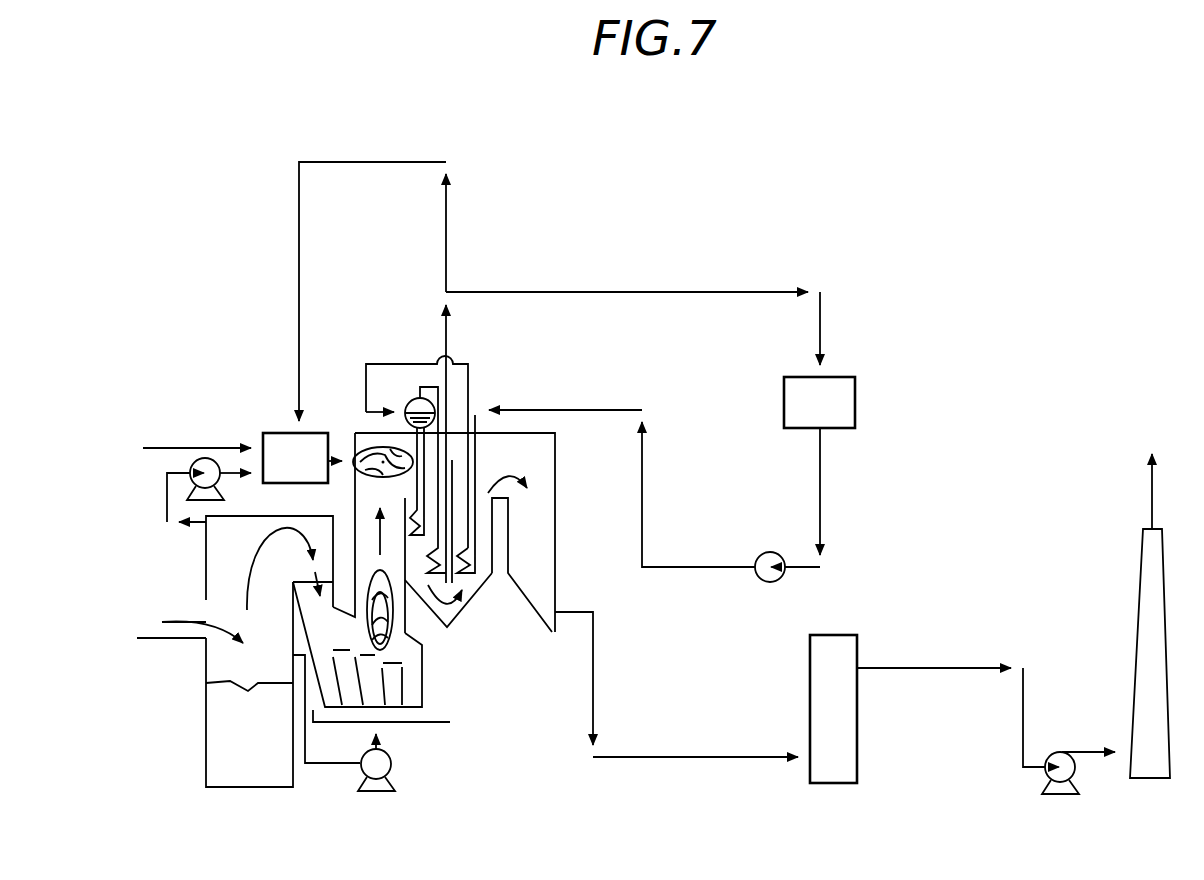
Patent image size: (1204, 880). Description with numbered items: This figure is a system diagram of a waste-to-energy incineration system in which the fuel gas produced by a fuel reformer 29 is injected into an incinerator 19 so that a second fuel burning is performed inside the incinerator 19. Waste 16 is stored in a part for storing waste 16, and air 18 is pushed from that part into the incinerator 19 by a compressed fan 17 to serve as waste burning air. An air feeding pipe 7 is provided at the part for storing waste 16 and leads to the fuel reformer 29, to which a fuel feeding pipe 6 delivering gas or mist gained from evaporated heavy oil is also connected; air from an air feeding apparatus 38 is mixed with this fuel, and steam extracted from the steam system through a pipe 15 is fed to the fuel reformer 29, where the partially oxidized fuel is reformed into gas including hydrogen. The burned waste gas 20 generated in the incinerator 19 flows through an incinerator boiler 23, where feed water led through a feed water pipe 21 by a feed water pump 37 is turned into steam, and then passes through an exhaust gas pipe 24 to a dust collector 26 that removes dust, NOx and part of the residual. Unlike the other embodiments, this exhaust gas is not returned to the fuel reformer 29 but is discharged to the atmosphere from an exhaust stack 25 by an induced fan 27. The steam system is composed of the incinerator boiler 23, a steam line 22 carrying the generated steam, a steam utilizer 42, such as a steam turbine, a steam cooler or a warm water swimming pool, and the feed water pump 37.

The fuel feeding pipe 6 is at (173, 447).
The air feeding pipe 7 is at (167, 495).
The pipe 15 is at (299, 257).
The part for storing waste 16 is at (177, 622).
The compressed fan 17 is at (390, 767).
The air 18 is at (382, 732).
The incinerator 19 is at (415, 672).
The burned waste gas 20 is at (378, 532).
The feed water pipe 21 is at (642, 487).
The gas outlet line 22 is at (755, 292).
The incinerator boiler 23 is at (415, 447).
The exhaust gas pipe 24 is at (685, 757).
The exhaust stack 25 is at (1143, 633).
The dust collector 26 is at (850, 765).
The induced fan 27 is at (1077, 767).
The fuel reformer 29 is at (277, 440).
The feed water pump 37 is at (770, 582).
The air feeding apparatus 38 is at (210, 465).
The steam utilizer 42 is at (833, 388).